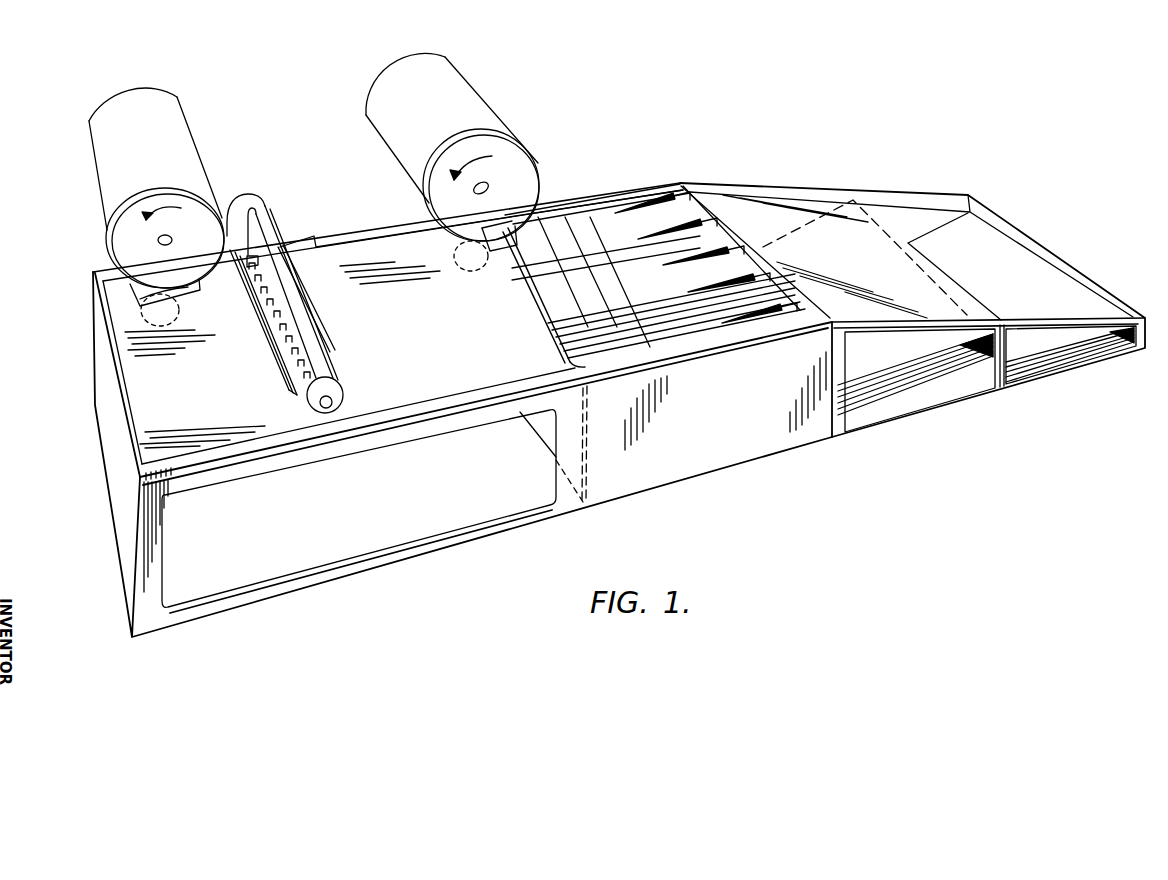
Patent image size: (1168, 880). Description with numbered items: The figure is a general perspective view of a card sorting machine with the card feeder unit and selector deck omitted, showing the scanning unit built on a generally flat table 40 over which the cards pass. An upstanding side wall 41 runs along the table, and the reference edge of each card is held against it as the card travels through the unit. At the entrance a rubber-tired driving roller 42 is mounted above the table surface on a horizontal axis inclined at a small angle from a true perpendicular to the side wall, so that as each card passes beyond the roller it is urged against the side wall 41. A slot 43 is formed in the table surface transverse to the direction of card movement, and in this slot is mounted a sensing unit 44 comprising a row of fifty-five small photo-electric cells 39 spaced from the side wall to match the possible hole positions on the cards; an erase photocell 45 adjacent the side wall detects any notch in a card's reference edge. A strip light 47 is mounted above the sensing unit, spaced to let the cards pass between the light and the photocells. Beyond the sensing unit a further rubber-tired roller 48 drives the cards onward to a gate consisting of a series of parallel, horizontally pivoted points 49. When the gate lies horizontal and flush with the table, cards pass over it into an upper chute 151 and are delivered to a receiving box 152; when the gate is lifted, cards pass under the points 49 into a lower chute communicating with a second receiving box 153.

The photo-electric cells 39 is at (277, 328).
The table 40 is at (185, 425).
The side wall 41 is at (348, 242).
The driving roller 42 is at (122, 239).
The slot 43 is at (327, 345).
The sensing unit 44 is at (282, 363).
The erase photocell 45 is at (248, 267).
The strip light 47 is at (250, 214).
The roller 48 is at (494, 136).
The points 49 is at (657, 234).
The upper chute 151 is at (787, 199).
The receiving box 152 is at (1022, 265).
The second receiving box 153 is at (900, 370).